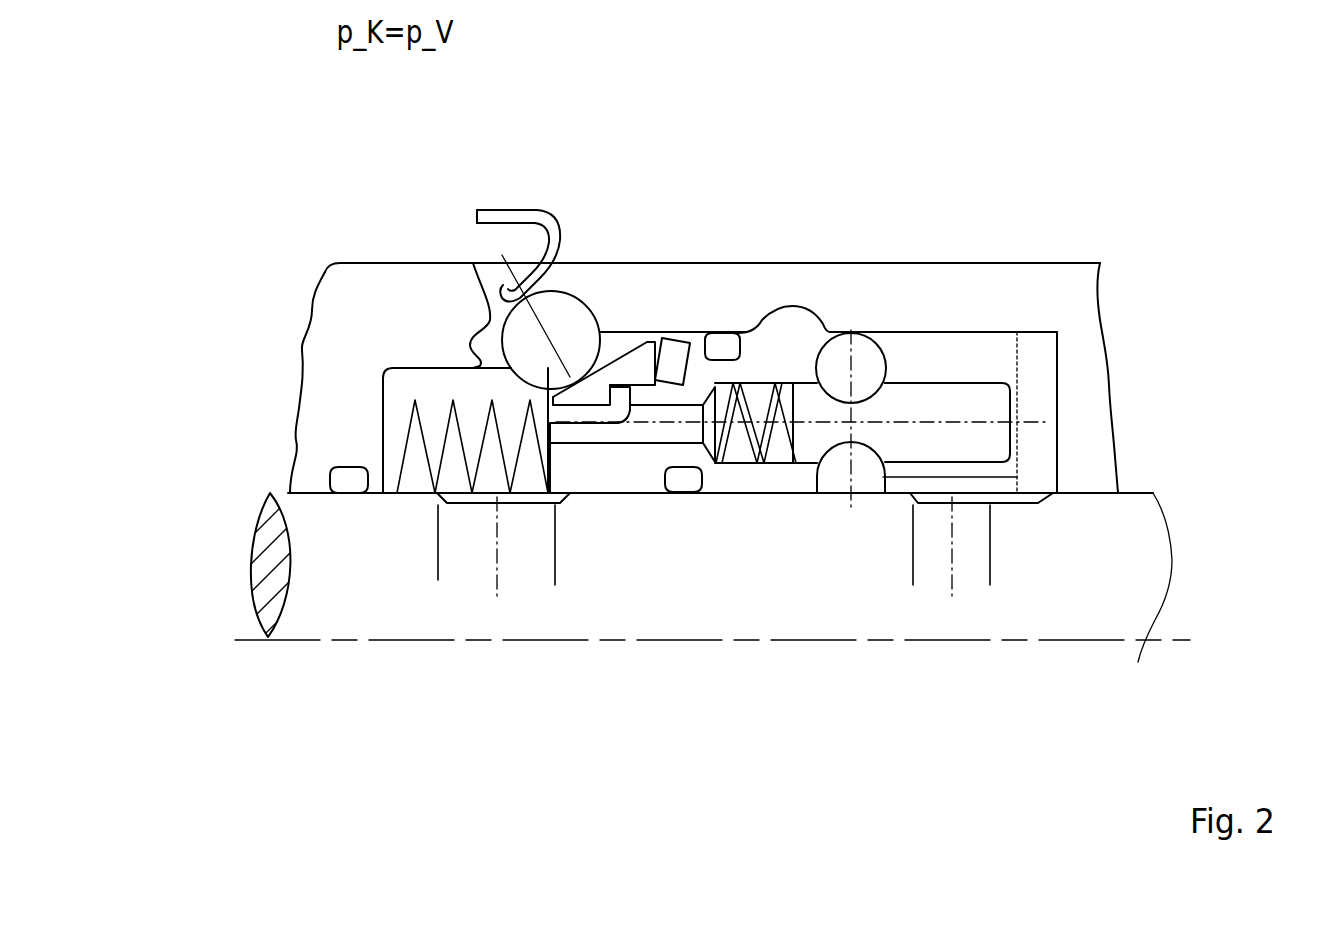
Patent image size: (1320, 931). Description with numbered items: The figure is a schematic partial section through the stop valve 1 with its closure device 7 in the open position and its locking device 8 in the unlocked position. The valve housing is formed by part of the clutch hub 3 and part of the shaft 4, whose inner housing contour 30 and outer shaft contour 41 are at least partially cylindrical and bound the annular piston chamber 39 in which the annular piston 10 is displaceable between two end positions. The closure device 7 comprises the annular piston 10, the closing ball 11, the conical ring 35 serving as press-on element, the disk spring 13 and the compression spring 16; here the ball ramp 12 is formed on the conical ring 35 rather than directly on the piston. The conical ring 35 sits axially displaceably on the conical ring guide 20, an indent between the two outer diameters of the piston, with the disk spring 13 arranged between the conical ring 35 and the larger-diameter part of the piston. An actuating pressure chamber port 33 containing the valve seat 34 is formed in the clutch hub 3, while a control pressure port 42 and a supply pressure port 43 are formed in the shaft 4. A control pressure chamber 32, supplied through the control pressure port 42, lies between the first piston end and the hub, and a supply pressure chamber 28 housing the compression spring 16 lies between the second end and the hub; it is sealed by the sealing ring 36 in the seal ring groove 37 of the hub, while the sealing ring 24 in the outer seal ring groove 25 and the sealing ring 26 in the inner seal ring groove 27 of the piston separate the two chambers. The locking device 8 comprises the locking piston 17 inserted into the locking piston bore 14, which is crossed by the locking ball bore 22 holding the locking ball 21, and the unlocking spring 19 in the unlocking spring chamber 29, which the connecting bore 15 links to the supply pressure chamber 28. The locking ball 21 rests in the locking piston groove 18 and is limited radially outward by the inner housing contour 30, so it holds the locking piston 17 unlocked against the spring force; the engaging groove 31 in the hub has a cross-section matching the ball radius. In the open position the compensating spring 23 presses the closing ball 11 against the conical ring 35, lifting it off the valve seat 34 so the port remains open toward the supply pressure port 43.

The stop valve 1 is at (858, 332).
The clutch hub 3 is at (356, 290).
The shaft 4 is at (1117, 572).
The closure device 7 is at (680, 332).
The locking device 8 is at (1021, 377).
The annular piston 10 is at (572, 463).
The closing ball 11 is at (567, 317).
The ball ramp 12 is at (617, 390).
The disk spring 13 is at (723, 332).
The locking piston bore 14 is at (990, 372).
The connecting bore 15 is at (688, 310).
The compression spring 16 is at (465, 388).
The locking piston 17 is at (1030, 398).
The locking piston groove 18 is at (873, 435).
The unlocking spring 19 is at (770, 445).
The conical ring guide 20 is at (690, 380).
The locking ball 21 is at (873, 332).
The locking ball bore 22 is at (1085, 494).
The compensating spring 23 is at (558, 225).
The sealing ring 24 is at (762, 330).
The sealing ring groove 25 is at (783, 333).
The sealing ring 26 is at (683, 480).
The sealing ring groove 27 is at (673, 477).
The supply pressure chamber 28 is at (462, 335).
The unlocking spring chamber 29 is at (778, 450).
The inner housing contour 30 is at (588, 257).
The engaging groove 31 is at (1065, 197).
The control pressure chamber 32 is at (1000, 415).
The actuating pressure chamber port 33 is at (490, 320).
The valve seat 34 is at (450, 300).
The conical ring 35 is at (671, 319).
The sealing ring 36 is at (348, 478).
The sealing ring groove 37 is at (440, 432).
The annular piston chamber 39 is at (632, 332).
The outer shaft contour 41 is at (415, 497).
The control pressure port 42 is at (968, 560).
The supply pressure port 43 is at (470, 557).